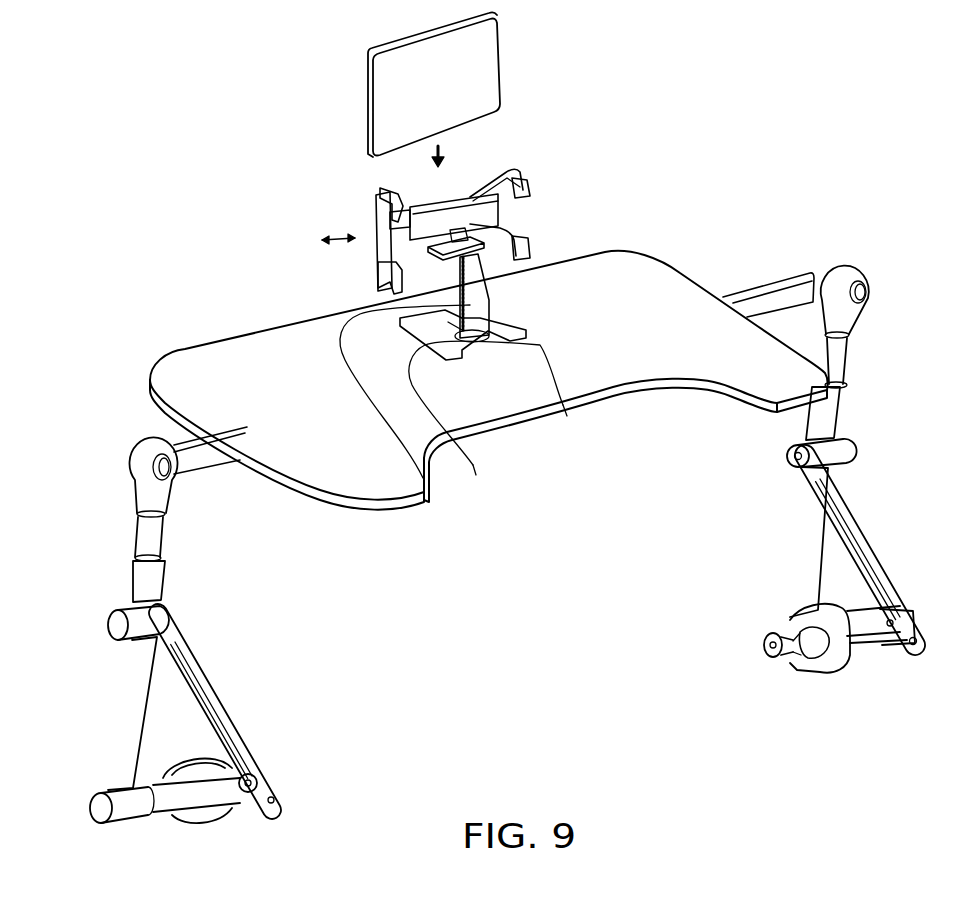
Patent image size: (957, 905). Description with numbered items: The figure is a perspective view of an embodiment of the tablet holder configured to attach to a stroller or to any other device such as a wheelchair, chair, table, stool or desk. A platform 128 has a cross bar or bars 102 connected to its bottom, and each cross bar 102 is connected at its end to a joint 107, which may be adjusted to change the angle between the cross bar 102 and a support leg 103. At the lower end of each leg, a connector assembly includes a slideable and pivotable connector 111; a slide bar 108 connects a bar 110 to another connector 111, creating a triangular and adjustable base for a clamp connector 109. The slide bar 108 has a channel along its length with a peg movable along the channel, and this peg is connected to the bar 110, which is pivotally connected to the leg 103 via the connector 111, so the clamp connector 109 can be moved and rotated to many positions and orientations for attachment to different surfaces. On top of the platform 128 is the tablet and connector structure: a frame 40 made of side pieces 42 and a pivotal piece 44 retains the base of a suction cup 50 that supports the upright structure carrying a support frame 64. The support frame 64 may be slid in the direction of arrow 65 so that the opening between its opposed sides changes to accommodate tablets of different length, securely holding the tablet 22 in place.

The tablet 22 is at (445, 97).
The frame 40 is at (512, 316).
The side pieces 42 is at (476, 468).
The pivotal piece 44 is at (423, 502).
The suction cup 50 is at (567, 416).
The support frame 64 is at (570, 210).
The arrow 65 is at (345, 238).
The cross bar 102 is at (203, 460).
The support leg 103 is at (838, 362).
The joint 107 is at (853, 268).
The slide bar 108 is at (837, 543).
The clamp connector 109 is at (832, 675).
The bar 110 is at (866, 632).
The connector 111 is at (852, 450).
The platform 128 is at (303, 328).